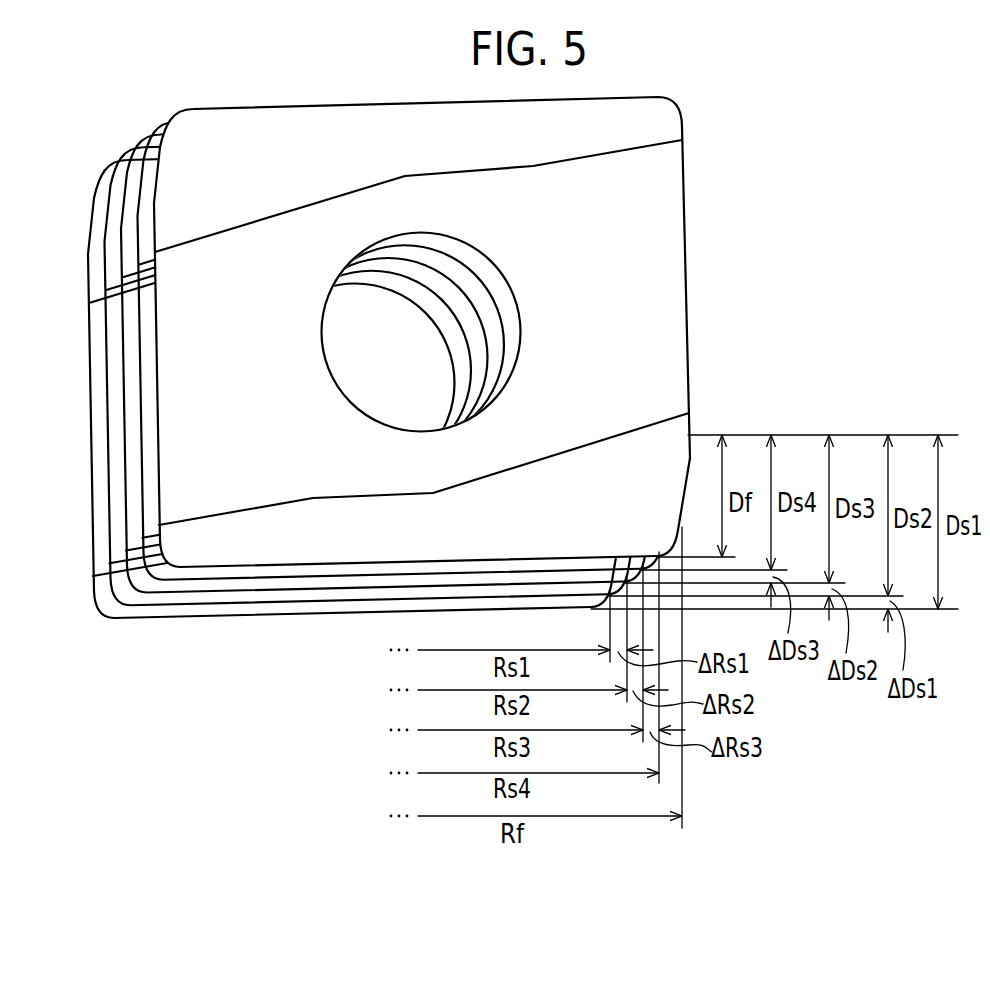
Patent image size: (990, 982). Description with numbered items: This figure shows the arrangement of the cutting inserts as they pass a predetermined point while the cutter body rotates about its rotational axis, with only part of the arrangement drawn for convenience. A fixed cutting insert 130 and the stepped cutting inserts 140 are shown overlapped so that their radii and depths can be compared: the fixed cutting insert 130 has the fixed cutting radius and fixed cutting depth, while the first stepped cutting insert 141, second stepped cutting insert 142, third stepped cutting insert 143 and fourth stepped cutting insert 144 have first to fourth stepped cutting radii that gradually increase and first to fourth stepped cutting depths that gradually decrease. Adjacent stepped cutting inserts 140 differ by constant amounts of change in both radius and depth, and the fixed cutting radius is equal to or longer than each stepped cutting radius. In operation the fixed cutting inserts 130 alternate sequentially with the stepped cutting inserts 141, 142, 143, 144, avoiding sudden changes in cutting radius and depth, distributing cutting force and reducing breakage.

The fixed cutting insert 130 is at (652, 256).
The stepped cutting inserts 140 is at (375, 441).
The first stepped cutting insert 141 is at (242, 718).
The second stepped cutting insert 142 is at (147, 604).
The third stepped cutting insert 143 is at (185, 592).
The fourth stepped cutting insert 144 is at (222, 579).